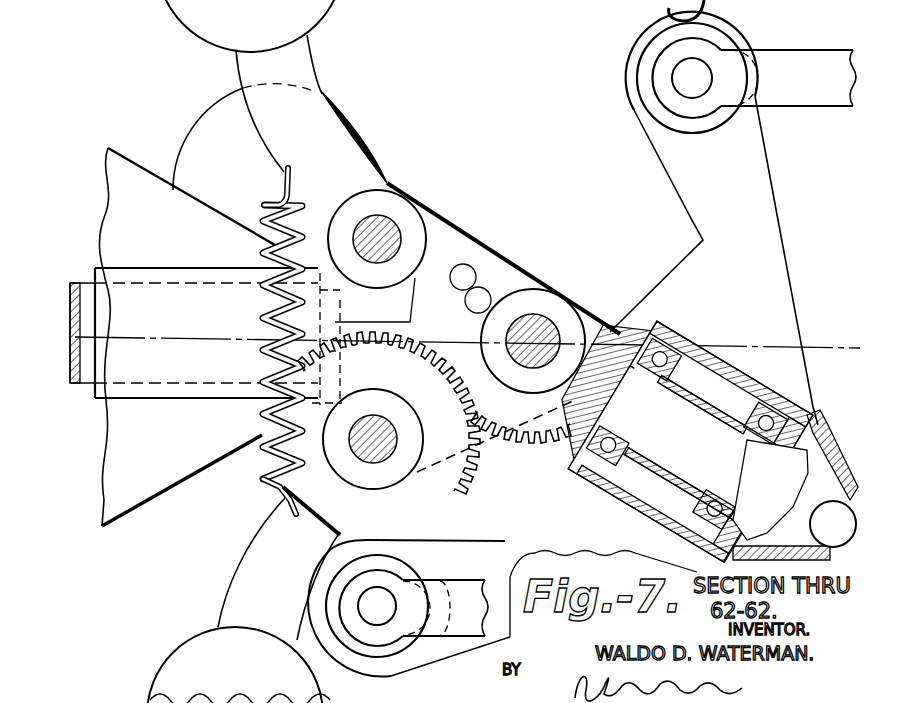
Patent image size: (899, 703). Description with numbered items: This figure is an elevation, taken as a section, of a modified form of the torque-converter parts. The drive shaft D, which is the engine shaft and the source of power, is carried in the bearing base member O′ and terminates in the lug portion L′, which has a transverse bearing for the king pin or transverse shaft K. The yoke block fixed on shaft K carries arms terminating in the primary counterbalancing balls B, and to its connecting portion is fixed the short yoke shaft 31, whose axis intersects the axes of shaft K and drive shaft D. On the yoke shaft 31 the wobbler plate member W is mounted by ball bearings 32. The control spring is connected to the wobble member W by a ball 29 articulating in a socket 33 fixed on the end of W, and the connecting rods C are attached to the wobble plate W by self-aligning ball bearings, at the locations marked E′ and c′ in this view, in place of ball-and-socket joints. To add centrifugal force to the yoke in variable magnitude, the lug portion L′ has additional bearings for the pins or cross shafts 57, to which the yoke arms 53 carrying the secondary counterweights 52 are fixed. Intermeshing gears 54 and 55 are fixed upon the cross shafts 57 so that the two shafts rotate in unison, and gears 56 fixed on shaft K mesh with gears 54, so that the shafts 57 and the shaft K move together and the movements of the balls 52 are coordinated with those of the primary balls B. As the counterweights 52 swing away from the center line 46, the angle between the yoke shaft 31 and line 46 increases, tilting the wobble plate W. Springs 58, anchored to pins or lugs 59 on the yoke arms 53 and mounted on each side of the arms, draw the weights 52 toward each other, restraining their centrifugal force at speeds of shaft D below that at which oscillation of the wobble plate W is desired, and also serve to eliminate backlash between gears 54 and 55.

The secondary counterweights 52 is at (318, 9).
The yoke arms 53 is at (310, 78).
The pins or lugs 59 is at (312, 167).
The springs 58 is at (265, 228).
The cross shafts 57 is at (385, 220).
The gear 55 is at (415, 280).
The gears 56 is at (527, 440).
The gears 54 is at (467, 477).
The center line 46 is at (177, 336).
The ball bearings 32 is at (767, 387).
The socket 33 is at (836, 470).
The yoke shaft 31 is at (683, 458).
The ball 29 is at (836, 538).
The counter balancing balls B is at (357, 135).
The drive shaft D is at (87, 378).
The bearing base member O′ is at (113, 201).
The lug portion L′ is at (440, 227).
The transverse shaft K is at (545, 322).
The connecting rods C is at (792, 60).
The roller pivot E′ is at (375, 620).
The pivot center c′ is at (663, 75).
The wabble member W is at (772, 213).